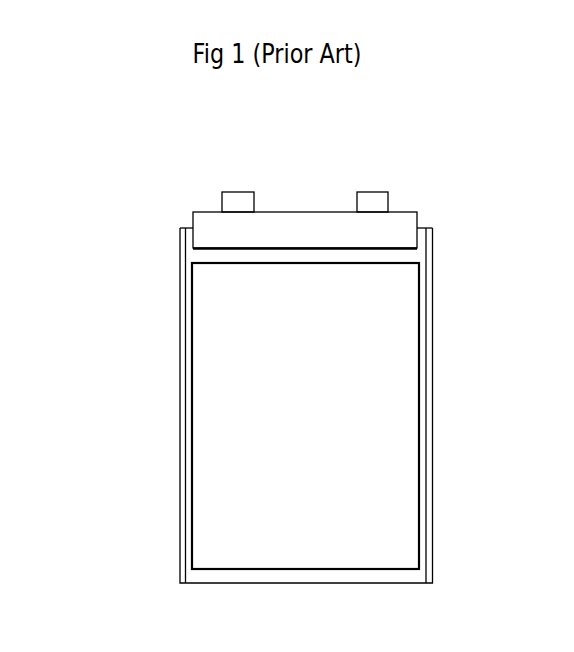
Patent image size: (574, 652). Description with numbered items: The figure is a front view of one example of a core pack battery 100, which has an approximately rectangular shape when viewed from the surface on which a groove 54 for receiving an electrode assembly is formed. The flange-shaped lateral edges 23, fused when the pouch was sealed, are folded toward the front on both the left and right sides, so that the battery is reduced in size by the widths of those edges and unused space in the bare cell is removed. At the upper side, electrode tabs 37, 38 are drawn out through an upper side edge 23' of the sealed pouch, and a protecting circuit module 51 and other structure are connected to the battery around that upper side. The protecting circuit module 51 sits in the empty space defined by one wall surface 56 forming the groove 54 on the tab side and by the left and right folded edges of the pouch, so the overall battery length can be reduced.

The core pack battery 100 is at (128, 322).
The protecting circuit module 51 is at (290, 217).
The electrode tab 38 is at (239, 192).
The electrode tab 37 is at (373, 192).
The lateral edge 23 is at (336, 405).
The upper side edge 23' is at (340, 244).
The groove 54 is at (412, 393).
The wall surface 56 is at (212, 259).